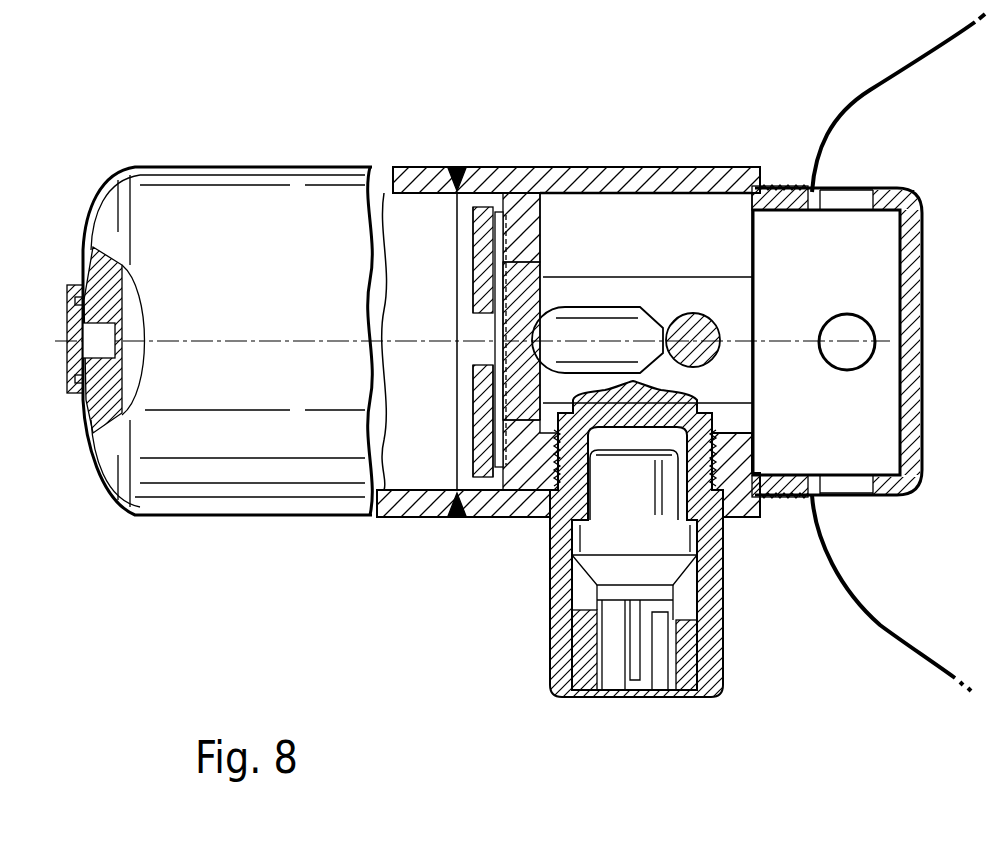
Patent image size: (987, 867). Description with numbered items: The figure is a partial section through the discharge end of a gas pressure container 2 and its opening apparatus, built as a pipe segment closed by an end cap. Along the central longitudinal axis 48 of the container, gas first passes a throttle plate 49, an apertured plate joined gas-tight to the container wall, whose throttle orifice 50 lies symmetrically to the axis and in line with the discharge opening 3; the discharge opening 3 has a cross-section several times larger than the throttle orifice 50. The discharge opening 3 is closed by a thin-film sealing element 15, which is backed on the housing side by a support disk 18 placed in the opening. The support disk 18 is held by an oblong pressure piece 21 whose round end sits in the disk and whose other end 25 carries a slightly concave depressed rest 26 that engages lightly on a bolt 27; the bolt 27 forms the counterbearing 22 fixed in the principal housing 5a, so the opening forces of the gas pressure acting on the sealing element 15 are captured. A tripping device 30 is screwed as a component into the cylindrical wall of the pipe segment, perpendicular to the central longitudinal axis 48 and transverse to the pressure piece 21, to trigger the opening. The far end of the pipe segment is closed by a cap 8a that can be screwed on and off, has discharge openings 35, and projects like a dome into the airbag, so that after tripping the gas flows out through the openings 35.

The aerosol can wall 2 is at (920, 57).
The discharge opening 3 is at (492, 263).
The housing 5a is at (718, 178).
The cap 8a is at (924, 231).
The sealing element 15 is at (478, 283).
The support disk 18 is at (527, 275).
The pressure piece 21 is at (568, 327).
The counterbearing 22 is at (726, 316).
The end of the pressure piece 25 is at (663, 325).
The depressed rest 26 is at (656, 334).
The bolt 27 is at (724, 368).
The tripping device 30 is at (577, 587).
The discharge openings 35 is at (852, 192).
The central longitudinal axis 48 is at (243, 340).
The throttle plate 49 is at (479, 225).
The throttle orifice 50 is at (483, 352).